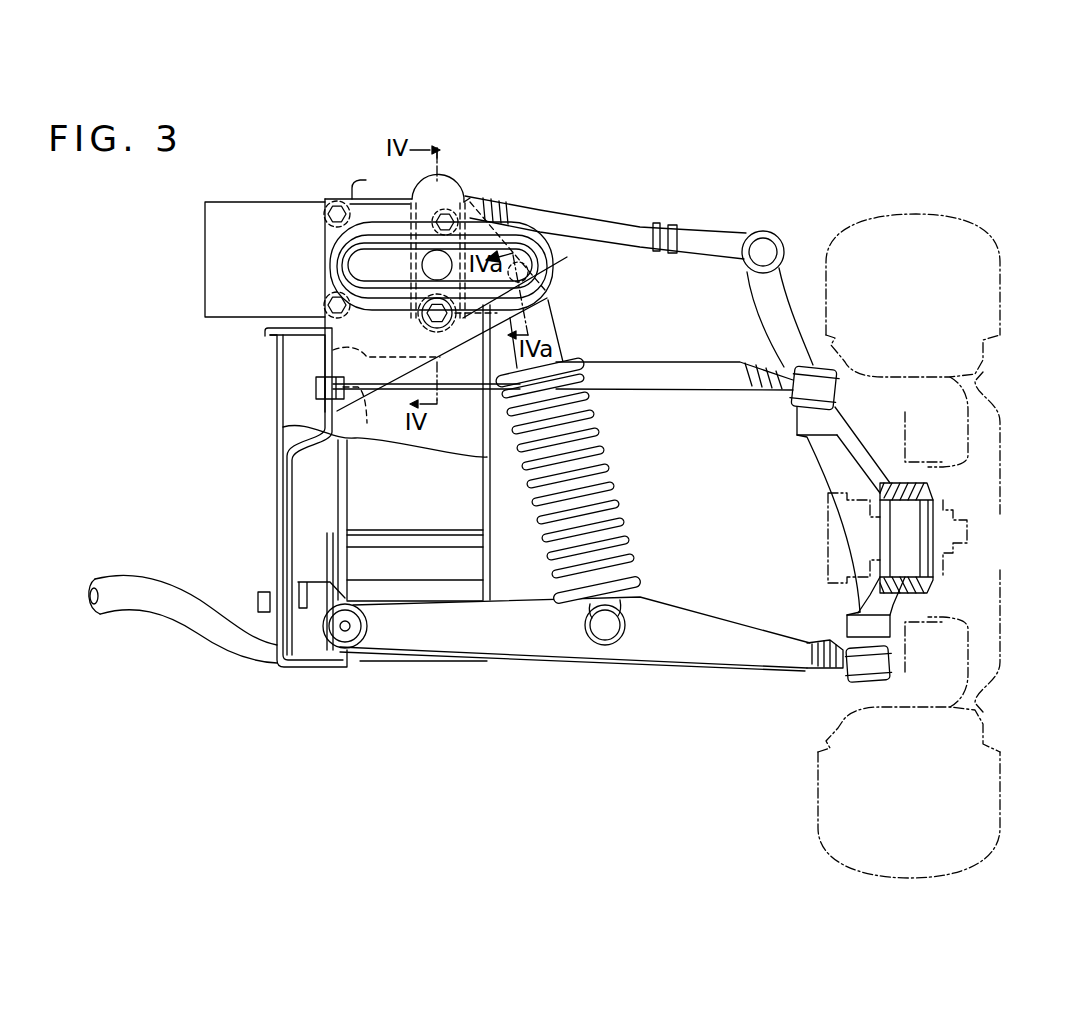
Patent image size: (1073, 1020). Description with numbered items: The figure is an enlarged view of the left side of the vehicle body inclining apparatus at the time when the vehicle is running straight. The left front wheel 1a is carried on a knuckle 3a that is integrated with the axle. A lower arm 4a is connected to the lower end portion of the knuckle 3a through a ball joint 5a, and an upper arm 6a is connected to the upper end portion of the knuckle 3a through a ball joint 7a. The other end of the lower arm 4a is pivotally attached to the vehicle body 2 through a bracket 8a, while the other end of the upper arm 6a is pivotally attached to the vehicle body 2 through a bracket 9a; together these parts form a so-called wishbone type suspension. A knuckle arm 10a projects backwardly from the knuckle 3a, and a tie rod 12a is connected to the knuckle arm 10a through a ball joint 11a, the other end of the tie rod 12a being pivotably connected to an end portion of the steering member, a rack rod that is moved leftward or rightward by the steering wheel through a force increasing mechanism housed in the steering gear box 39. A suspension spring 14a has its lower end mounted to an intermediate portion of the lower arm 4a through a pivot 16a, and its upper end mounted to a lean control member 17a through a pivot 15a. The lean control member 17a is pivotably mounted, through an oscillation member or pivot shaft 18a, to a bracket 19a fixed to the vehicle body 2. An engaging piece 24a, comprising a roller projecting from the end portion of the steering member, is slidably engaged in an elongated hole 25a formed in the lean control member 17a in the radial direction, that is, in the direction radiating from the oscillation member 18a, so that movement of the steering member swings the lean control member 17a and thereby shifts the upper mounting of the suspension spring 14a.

The left front wheel 1a is at (1002, 376).
The vehicle body 2 is at (308, 686).
The knuckle 3a is at (832, 473).
The lower arm 4a is at (622, 656).
The ball joint 5a is at (856, 668).
The upper arm 6a is at (662, 388).
The ball joint 7a is at (792, 388).
The bracket 8a is at (358, 664).
The bracket 9a is at (425, 357).
The knuckle arm 10a is at (753, 318).
The ball joint 11a is at (770, 231).
The tie rod 12a is at (618, 224).
The suspension spring 14a is at (616, 497).
The pivot 15a is at (547, 276).
The pivot 16a is at (624, 612).
The lean control member 17a is at (417, 198).
The oscillation member or pivot shaft 18a is at (423, 322).
The bracket 19a is at (462, 340).
The engaging piece 24a is at (410, 276).
The elongated hole 25a is at (458, 203).
The steering gear box 39 is at (275, 202).